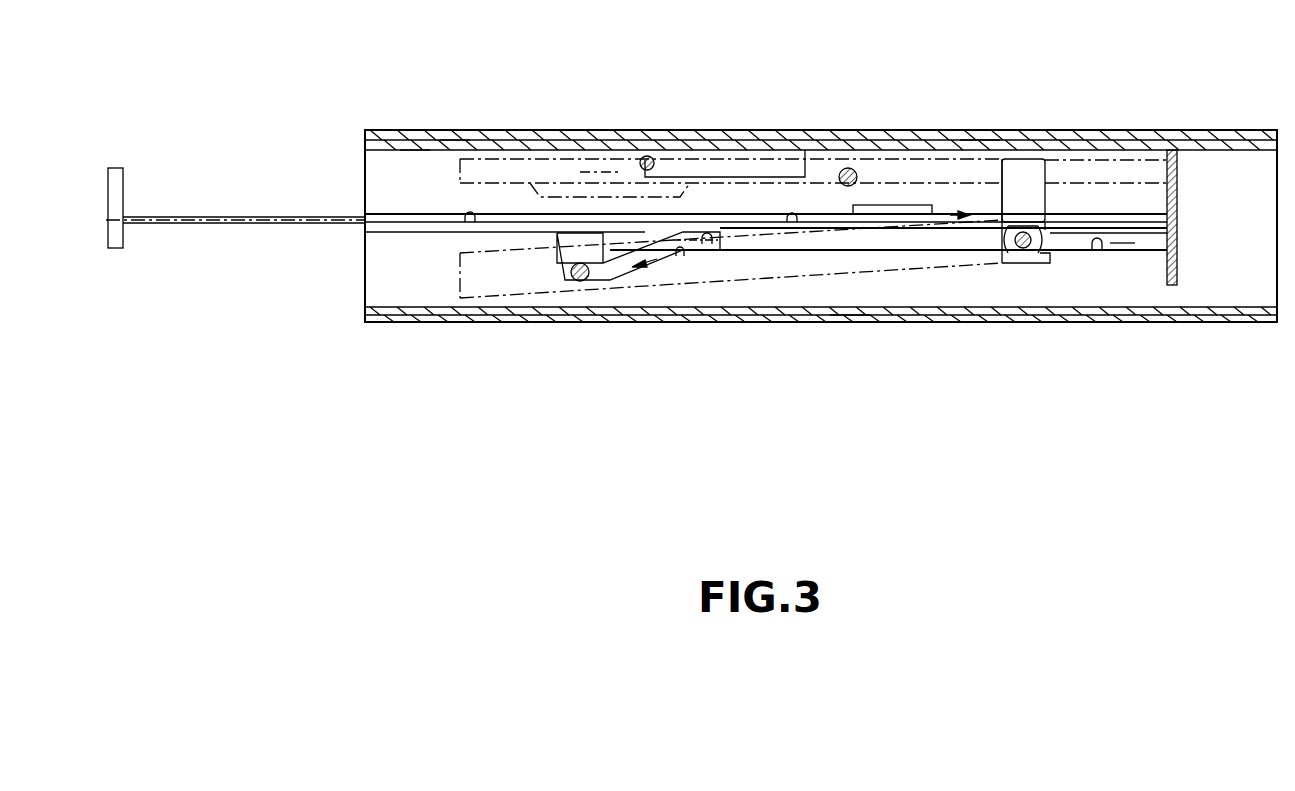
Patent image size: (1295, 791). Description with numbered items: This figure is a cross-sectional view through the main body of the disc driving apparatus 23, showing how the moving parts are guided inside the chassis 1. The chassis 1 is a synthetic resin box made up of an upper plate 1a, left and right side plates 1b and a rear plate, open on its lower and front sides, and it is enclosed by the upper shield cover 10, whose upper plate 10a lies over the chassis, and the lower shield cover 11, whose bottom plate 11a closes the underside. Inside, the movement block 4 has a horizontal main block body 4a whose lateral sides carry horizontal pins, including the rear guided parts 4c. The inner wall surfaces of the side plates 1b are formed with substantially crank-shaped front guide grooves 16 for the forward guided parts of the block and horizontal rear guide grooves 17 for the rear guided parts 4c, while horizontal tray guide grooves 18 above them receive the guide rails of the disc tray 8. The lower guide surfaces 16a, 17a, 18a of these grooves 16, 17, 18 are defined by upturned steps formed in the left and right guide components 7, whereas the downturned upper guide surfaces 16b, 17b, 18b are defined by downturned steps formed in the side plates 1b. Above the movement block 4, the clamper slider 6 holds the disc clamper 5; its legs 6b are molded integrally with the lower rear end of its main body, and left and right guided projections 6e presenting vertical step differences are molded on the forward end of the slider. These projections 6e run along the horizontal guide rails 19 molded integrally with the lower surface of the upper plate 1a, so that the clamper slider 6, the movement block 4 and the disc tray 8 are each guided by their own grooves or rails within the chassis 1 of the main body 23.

The chassis 1 is at (512, 140).
The upper plate 1a is at (455, 138).
The side plates 1b is at (415, 165).
The movement block 4 is at (515, 290).
The main block body 4a is at (580, 283).
The rear guided parts 4c is at (1022, 250).
The disc clamper 5 is at (555, 185).
The clamper slider 6 is at (592, 170).
The legs 6b is at (1035, 186).
The guided projections 6e is at (642, 156).
The guide components 7 is at (373, 265).
The disc tray 8 is at (215, 218).
The upper shield cover 10 is at (917, 140).
The upper plate 10a is at (978, 140).
The lower shield cover 11 is at (905, 322).
The bottom plate 11a is at (850, 322).
The front guide grooves 16 is at (680, 256).
The lower guide surface 16a is at (690, 258).
The upper guide surface 16b is at (722, 235).
The rear guide grooves 17 is at (1145, 252).
The lower guide surface 17a is at (1097, 252).
The upper guide surface 17b is at (1110, 243).
The tray guide grooves 18 is at (435, 225).
The lower guide surface 18a is at (470, 223).
The upper guide surface 18b is at (388, 218).
The guide rails 19 is at (733, 178).
The main body of the disc driving apparatus 23 is at (1100, 128).